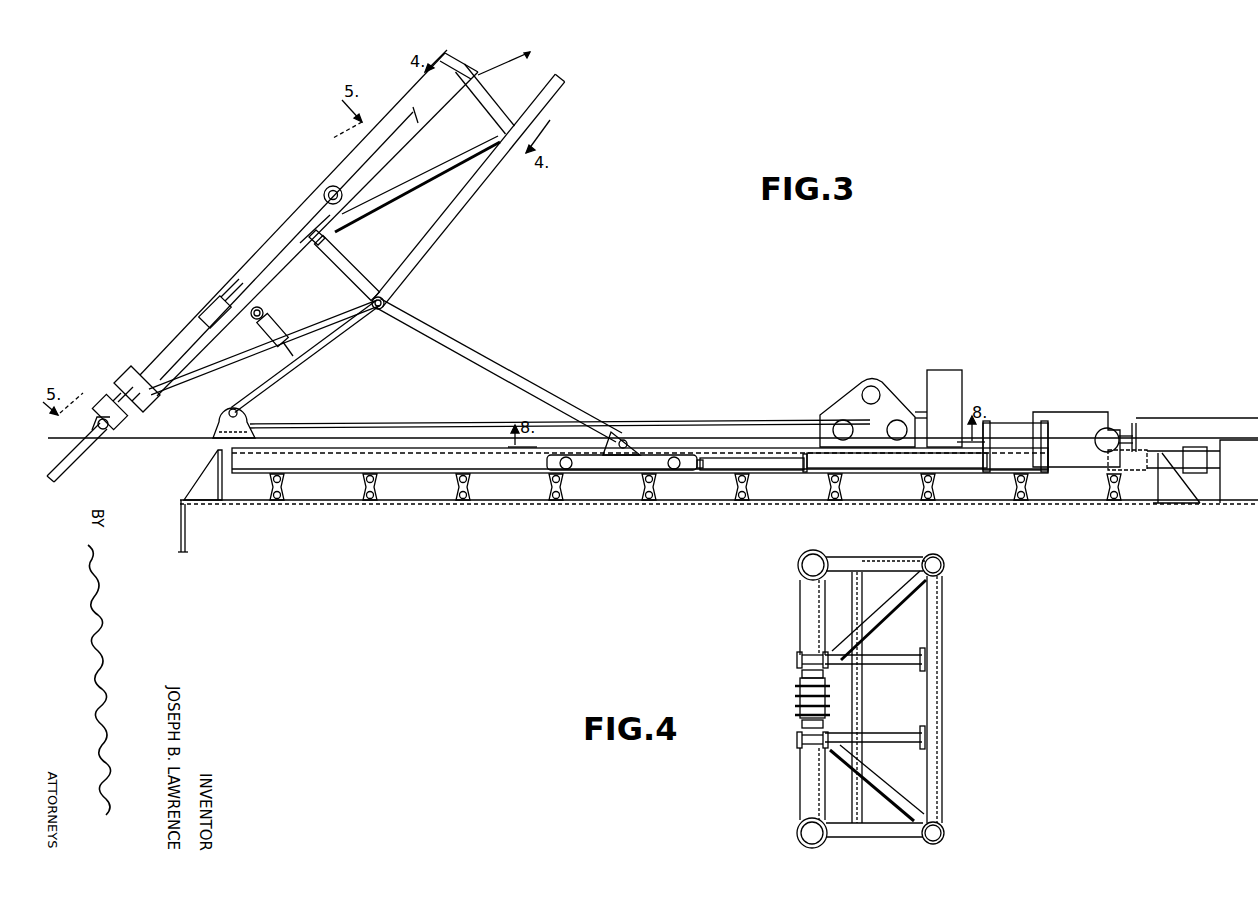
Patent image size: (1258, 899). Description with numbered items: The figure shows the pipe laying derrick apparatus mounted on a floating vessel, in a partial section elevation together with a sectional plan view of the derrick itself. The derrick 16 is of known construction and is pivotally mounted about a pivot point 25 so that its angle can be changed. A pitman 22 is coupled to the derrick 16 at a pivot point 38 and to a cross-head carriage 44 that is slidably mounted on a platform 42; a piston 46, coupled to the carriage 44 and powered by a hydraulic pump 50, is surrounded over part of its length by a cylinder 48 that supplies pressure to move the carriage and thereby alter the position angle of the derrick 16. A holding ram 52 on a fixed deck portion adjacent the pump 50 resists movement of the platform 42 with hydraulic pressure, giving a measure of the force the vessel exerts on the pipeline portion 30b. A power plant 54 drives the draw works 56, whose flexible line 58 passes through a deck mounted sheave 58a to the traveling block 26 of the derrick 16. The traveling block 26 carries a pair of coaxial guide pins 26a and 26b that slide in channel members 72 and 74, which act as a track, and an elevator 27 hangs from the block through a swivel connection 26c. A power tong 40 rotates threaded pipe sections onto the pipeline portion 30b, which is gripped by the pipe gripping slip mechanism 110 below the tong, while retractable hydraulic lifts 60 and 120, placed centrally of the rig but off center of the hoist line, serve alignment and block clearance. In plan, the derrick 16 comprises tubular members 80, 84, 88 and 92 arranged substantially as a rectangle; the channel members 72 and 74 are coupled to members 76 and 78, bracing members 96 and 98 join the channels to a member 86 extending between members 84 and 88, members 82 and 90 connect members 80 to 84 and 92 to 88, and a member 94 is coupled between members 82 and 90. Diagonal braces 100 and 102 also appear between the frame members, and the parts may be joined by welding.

In FIG. 3, the derrick 16 is at (478, 204).
In FIG. 4, the derrick 16 is at (878, 556).
In FIG. 3, the pitman 22 is at (470, 350).
In FIG. 3, the pivot point 25 is at (110, 447).
In FIG. 3, the traveling block 26 is at (323, 190).
In FIG. 4, the traveling block 26 is at (795, 700).
In FIG. 4, the guide pin 26a is at (800, 672).
In FIG. 4, the guide pin 26b is at (800, 728).
In FIG. 3, the swivel connection 26c is at (262, 255).
In FIG. 3, the elevator 27 is at (204, 300).
In FIG. 3, the pipeline portion 30b is at (72, 458).
In FIG. 3, the pivot point 38 is at (388, 304).
In FIG. 3, the power tong 40 is at (130, 378).
In FIG. 3, the platform 42 is at (512, 504).
In FIG. 3, the cross-head carriage 44 is at (612, 470).
In FIG. 3, the piston 46 is at (755, 470).
In FIG. 3, the cylinder 48 is at (963, 470).
In FIG. 3, the hydraulic pump 50 is at (1074, 418).
In FIG. 3, the holding ram 52 is at (1236, 438).
In FIG. 3, the power plant 54 is at (940, 376).
In FIG. 3, the draw works 56 is at (885, 378).
In FIG. 3, the flexible line 58 is at (430, 422).
In FIG. 3, the deck mounted sheave 58a is at (250, 418).
In FIG. 3, the retractable hydraulic lift 60 is at (264, 334).
In FIG. 4, the channel member 72 is at (795, 652).
In FIG. 4, the channel member 74 is at (798, 748).
In FIG. 4, the member 76 is at (800, 796).
In FIG. 4, the member 78 is at (800, 602).
In FIG. 4, the tubular member 80 is at (826, 550).
In FIG. 4, the member 82 is at (893, 562).
In FIG. 4, the tubular member 84 is at (946, 562).
In FIG. 4, the member 86 is at (934, 608).
In FIG. 3, the tubular member 88 is at (545, 116).
In FIG. 4, the tubular member 88 is at (946, 836).
In FIG. 3, the member 90 is at (500, 112).
In FIG. 4, the member 90 is at (882, 838).
In FIG. 3, the tubular member 92 is at (428, 94).
In FIG. 4, the tubular member 92 is at (800, 845).
In FIG. 4, the member 94 is at (860, 708).
In FIG. 4, the bracing member 96 is at (878, 658).
In FIG. 4, the bracing member 98 is at (882, 734).
In FIG. 4, the lower diagonal brace 100 is at (894, 792).
In FIG. 4, the upper diagonal brace 102 is at (902, 604).
In FIG. 3, the pipe gripping slip mechanism 110 is at (107, 403).
In FIG. 3, the retractable hydraulic lift 120 is at (356, 268).